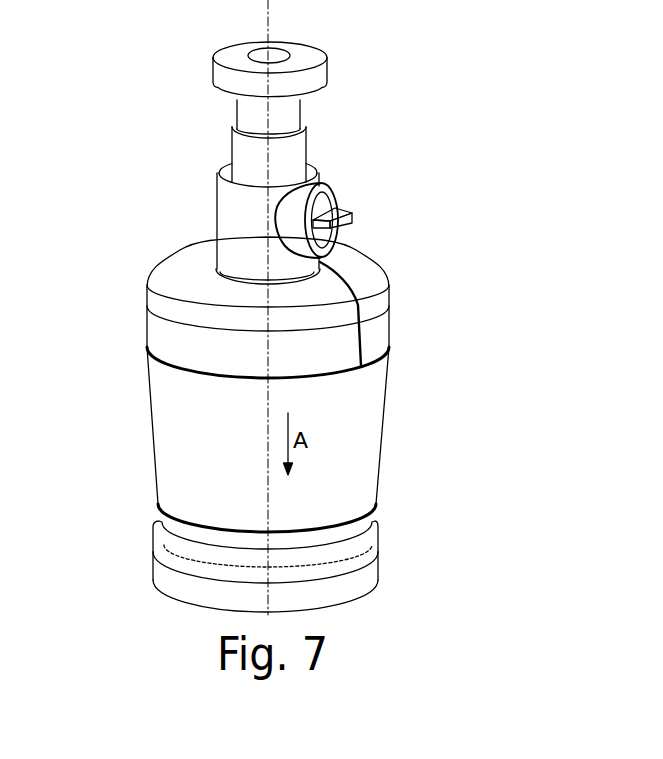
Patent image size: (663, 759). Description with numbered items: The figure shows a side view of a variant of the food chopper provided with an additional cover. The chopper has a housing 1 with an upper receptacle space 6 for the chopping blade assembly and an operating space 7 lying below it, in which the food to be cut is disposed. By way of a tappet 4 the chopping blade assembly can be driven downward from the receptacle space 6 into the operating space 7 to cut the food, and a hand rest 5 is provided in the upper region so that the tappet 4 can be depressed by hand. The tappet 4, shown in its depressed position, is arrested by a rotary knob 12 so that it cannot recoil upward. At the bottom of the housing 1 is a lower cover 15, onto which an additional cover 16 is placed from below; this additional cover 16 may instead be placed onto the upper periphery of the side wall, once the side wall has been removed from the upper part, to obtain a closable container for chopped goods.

The housing 1 is at (388, 282).
The tappet 4 is at (292, 117).
The hand rest 5 is at (309, 53).
The receptacle space 6 is at (156, 286).
The operating space 7 is at (158, 453).
The rotary knob 12 is at (352, 213).
The lower cover 15 is at (378, 538).
The additional cover 16 is at (378, 575).